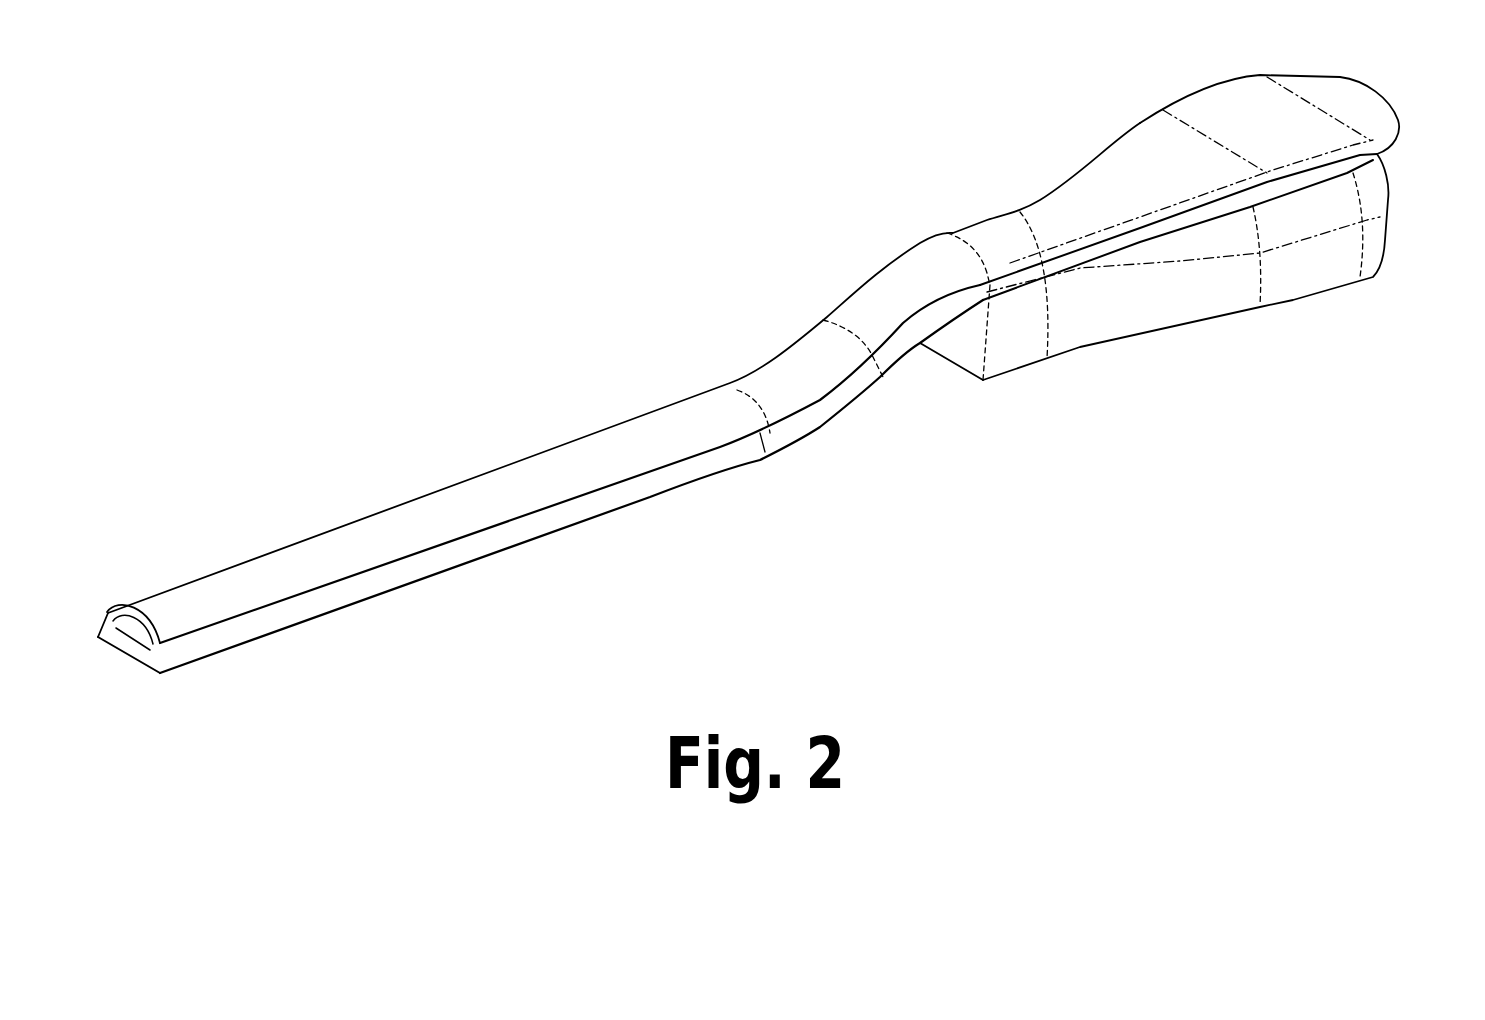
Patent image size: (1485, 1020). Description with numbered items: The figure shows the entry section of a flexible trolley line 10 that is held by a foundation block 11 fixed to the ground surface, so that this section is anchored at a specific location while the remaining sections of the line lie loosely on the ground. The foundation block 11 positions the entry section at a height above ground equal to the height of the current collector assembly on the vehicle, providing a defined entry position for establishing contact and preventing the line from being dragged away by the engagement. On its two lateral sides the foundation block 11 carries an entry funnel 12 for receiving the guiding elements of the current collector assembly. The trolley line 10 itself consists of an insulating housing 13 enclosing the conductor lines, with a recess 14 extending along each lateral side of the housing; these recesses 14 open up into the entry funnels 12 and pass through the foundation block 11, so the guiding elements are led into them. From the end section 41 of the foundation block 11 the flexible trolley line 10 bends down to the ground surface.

The trolley line 10 is at (552, 265).
The foundation block 11 is at (1227, 303).
The entry funnel 12 is at (1385, 167).
The insulating housing 13 is at (405, 517).
The recess 14 is at (575, 508).
The end section 41 is at (1010, 320).